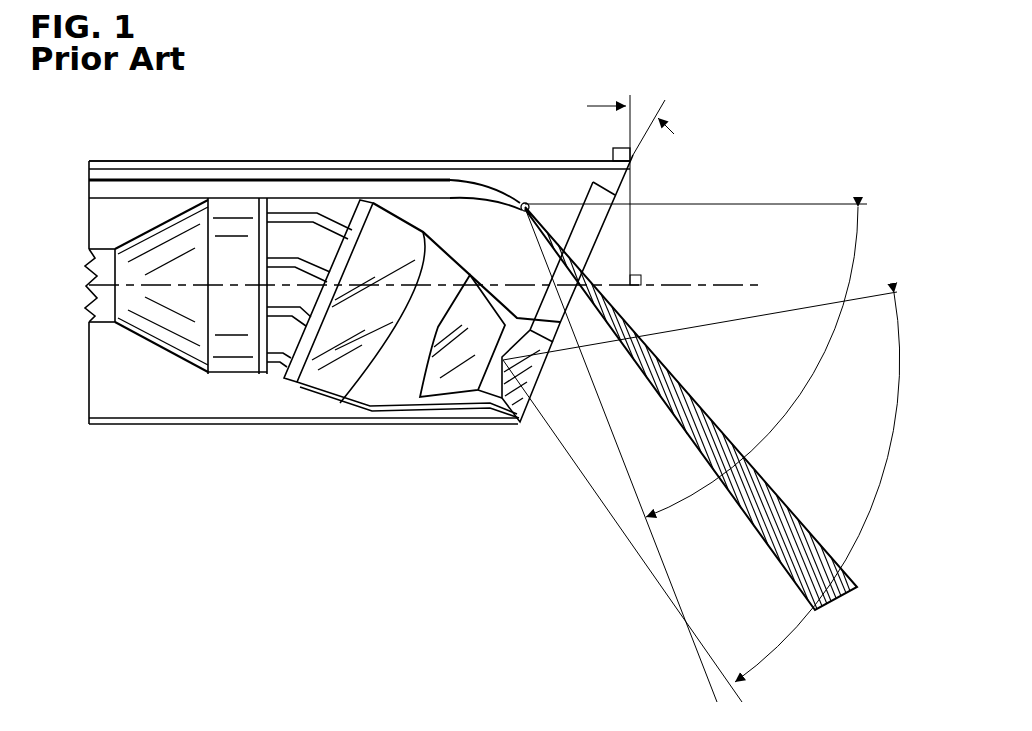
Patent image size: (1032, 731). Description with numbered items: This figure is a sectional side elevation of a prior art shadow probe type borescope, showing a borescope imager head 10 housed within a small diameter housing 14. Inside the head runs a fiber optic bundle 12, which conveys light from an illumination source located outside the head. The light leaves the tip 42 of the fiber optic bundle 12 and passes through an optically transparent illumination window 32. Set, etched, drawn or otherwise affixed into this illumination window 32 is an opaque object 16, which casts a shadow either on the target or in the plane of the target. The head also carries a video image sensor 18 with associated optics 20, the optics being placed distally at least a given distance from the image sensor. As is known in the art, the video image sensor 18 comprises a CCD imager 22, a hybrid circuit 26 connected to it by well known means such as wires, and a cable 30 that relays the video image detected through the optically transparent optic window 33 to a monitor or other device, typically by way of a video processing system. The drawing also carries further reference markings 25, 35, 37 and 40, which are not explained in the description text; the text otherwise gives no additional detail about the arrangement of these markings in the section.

The borescope imager head 10 is at (172, 150).
The fiber optic bundle 12 is at (490, 192).
The small diameter housing 14 is at (288, 161).
The opaque object 16 is at (583, 273).
The video image sensor 18 is at (284, 382).
The optics 20 is at (442, 373).
The CCD imager 22 is at (310, 386).
The exhaust duct 25 is at (460, 225).
The hybrid circuit 26 is at (228, 362).
The cable 30 is at (95, 268).
The illumination window 32 is at (633, 187).
The optic window 33 is at (547, 372).
The engine centerline 35 is at (690, 280).
The flap deflection angle 37 is at (773, 218).
The exhaust flow angle 40 is at (848, 530).
The tip 42 is at (528, 203).